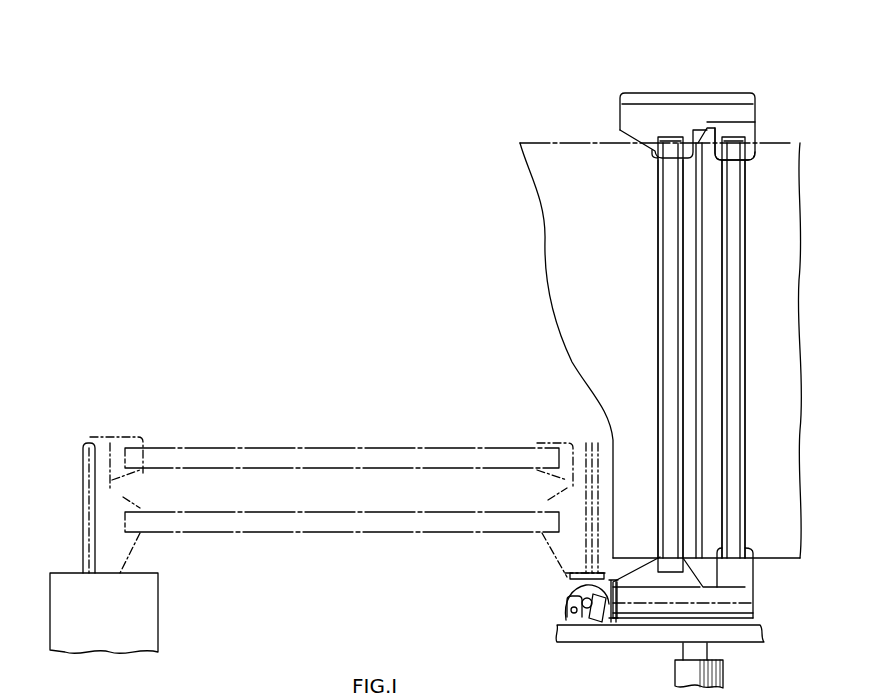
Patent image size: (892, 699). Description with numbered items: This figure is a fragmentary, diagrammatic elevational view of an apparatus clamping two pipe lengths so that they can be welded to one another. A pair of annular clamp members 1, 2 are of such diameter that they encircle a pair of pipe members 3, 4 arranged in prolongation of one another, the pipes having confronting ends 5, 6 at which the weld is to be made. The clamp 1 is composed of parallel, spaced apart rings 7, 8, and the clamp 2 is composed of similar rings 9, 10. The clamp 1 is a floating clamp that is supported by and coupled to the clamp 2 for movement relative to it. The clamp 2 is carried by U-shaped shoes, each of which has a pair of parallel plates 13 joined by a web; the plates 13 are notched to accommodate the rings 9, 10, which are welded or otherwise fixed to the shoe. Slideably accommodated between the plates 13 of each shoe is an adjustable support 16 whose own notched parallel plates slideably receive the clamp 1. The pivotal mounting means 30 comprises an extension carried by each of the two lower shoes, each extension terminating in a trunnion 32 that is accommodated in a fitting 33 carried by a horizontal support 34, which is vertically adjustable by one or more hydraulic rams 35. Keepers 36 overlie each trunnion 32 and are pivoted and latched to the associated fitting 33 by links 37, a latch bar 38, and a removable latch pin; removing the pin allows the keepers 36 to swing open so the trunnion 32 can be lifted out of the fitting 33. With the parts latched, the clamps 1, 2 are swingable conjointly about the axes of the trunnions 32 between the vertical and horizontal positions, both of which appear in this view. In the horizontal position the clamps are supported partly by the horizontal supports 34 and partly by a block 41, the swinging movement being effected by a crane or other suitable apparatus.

The annular clamp member 1 is at (754, 386).
The annular clamp member 2 is at (655, 350).
The pipe member 3 is at (771, 262).
The pipe member 4 is at (589, 262).
The confronting end 5 is at (700, 190).
The confronting end 6 is at (698, 205).
The ring 7 is at (745, 301).
The ring 8 is at (727, 328).
The ring 9 is at (678, 282).
The ring 10 is at (658, 313).
The parallel plates 13 is at (647, 139).
The adjustable support 16 is at (763, 133).
The pivotal mounting means 30 is at (556, 615).
The trunnion 32 is at (590, 625).
The fitting 33 is at (578, 622).
The horizontal support 34 is at (639, 634).
The hydraulic ram 35 is at (732, 673).
The keeper 36 is at (585, 588).
The links 37 is at (566, 604).
The latch bar 38 is at (616, 608).
The block 41 is at (158, 597).